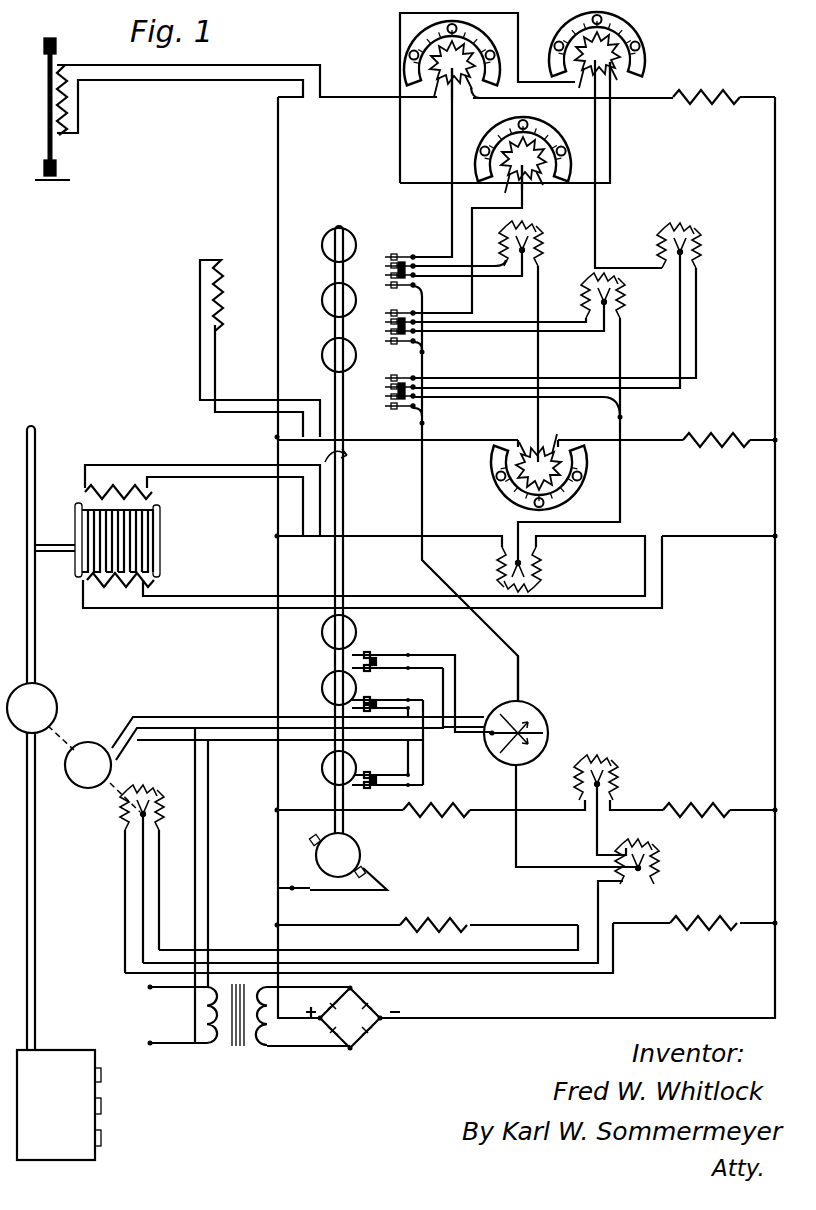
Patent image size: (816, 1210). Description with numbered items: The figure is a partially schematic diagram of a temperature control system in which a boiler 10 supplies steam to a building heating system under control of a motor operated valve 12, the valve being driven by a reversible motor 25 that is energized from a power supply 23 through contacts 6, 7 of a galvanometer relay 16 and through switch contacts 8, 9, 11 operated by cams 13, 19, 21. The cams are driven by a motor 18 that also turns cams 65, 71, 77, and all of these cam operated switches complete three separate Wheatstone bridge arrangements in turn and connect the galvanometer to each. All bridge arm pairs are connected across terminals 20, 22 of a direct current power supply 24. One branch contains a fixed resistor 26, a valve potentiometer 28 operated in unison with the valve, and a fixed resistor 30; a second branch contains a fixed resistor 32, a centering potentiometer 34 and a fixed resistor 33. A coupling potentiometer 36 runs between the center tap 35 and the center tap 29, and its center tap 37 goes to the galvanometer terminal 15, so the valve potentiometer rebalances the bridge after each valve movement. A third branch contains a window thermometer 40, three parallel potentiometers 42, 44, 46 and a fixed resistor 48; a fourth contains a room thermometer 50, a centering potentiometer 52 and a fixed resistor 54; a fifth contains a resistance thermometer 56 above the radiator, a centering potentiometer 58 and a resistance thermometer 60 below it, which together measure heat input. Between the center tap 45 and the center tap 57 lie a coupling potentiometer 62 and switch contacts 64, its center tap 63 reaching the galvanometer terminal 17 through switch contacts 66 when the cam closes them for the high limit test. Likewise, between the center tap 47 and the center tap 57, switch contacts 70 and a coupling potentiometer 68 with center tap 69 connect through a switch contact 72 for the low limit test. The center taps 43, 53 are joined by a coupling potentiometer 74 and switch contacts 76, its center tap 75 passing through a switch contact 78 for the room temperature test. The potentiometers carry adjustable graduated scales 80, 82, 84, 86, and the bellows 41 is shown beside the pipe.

The galvanometer contact 6 is at (505, 722).
The galvanometer contact 7 is at (508, 745).
The switch contacts 8 is at (372, 658).
The switch contacts 9 is at (372, 705).
The boiler 10 is at (60, 1058).
The switch contacts 11 is at (372, 778).
The motor operated valve 12 is at (48, 692).
The cam 13 is at (328, 626).
The galvanometer terminal 15 is at (530, 778).
The galvanometer relay 16 is at (555, 708).
The galvanometer terminal 17 is at (528, 703).
The motor 18 is at (362, 850).
The cam 19 is at (327, 680).
The power supply terminal 20 is at (278, 620).
The cam 21 is at (325, 758).
The power supply terminal 22 is at (775, 640).
The power supply 23 is at (208, 1042).
The direct current power supply 24 is at (372, 998).
The reversible motor 25 is at (75, 742).
The fixed resistor 26 is at (443, 917).
The valve potentiometer 28 is at (158, 805).
The center tap 29 is at (145, 800).
The fixed resistor 30 is at (713, 918).
The fixed resistor 32 is at (437, 805).
The fixed resistor 33 is at (706, 803).
The centering potentiometer 34 is at (620, 793).
The center tap 35 is at (612, 778).
The coupling potentiometer 36 is at (656, 862).
The center tap 37 is at (658, 877).
The window thermometer 40 is at (82, 125).
The bellows 41 is at (162, 532).
The potentiometer 42 is at (476, 90).
The center tap 43 is at (458, 72).
The potentiometer 44 is at (615, 75).
The center tap 45 is at (592, 50).
The potentiometer 46 is at (540, 180).
The center tap 47 is at (528, 158).
The fixed resistor 48 is at (710, 95).
The room thermometer 50 is at (210, 308).
The centering potentiometer 52 is at (520, 448).
The center tap 53 is at (556, 448).
The fixed resistor 54 is at (722, 437).
The resistance thermometer 56 is at (125, 490).
The center tap 57 is at (535, 578).
The centering potentiometer 58 is at (540, 560).
The resistance thermometer 60 is at (118, 595).
The coupling potentiometer 62 is at (698, 248).
The center tap 63 is at (690, 238).
The switch contacts 64 is at (393, 343).
The cam 65 is at (325, 348).
The switch contacts 66 is at (396, 408).
The coupling potentiometer 68 is at (620, 300).
The center tap 69 is at (598, 292).
The switch contacts 70 is at (393, 286).
The cam 71 is at (325, 290).
The switch contact 72 is at (393, 377).
The coupling potentiometer 74 is at (545, 246).
The center tap 75 is at (530, 240).
The switch contacts 76 is at (390, 258).
The cam 77 is at (333, 232).
The switch contact 78 is at (393, 312).
The graduated scale 80 is at (478, 45).
The graduated scale 82 is at (628, 40).
The graduated scale 84 is at (556, 148).
The graduated scale 86 is at (583, 484).